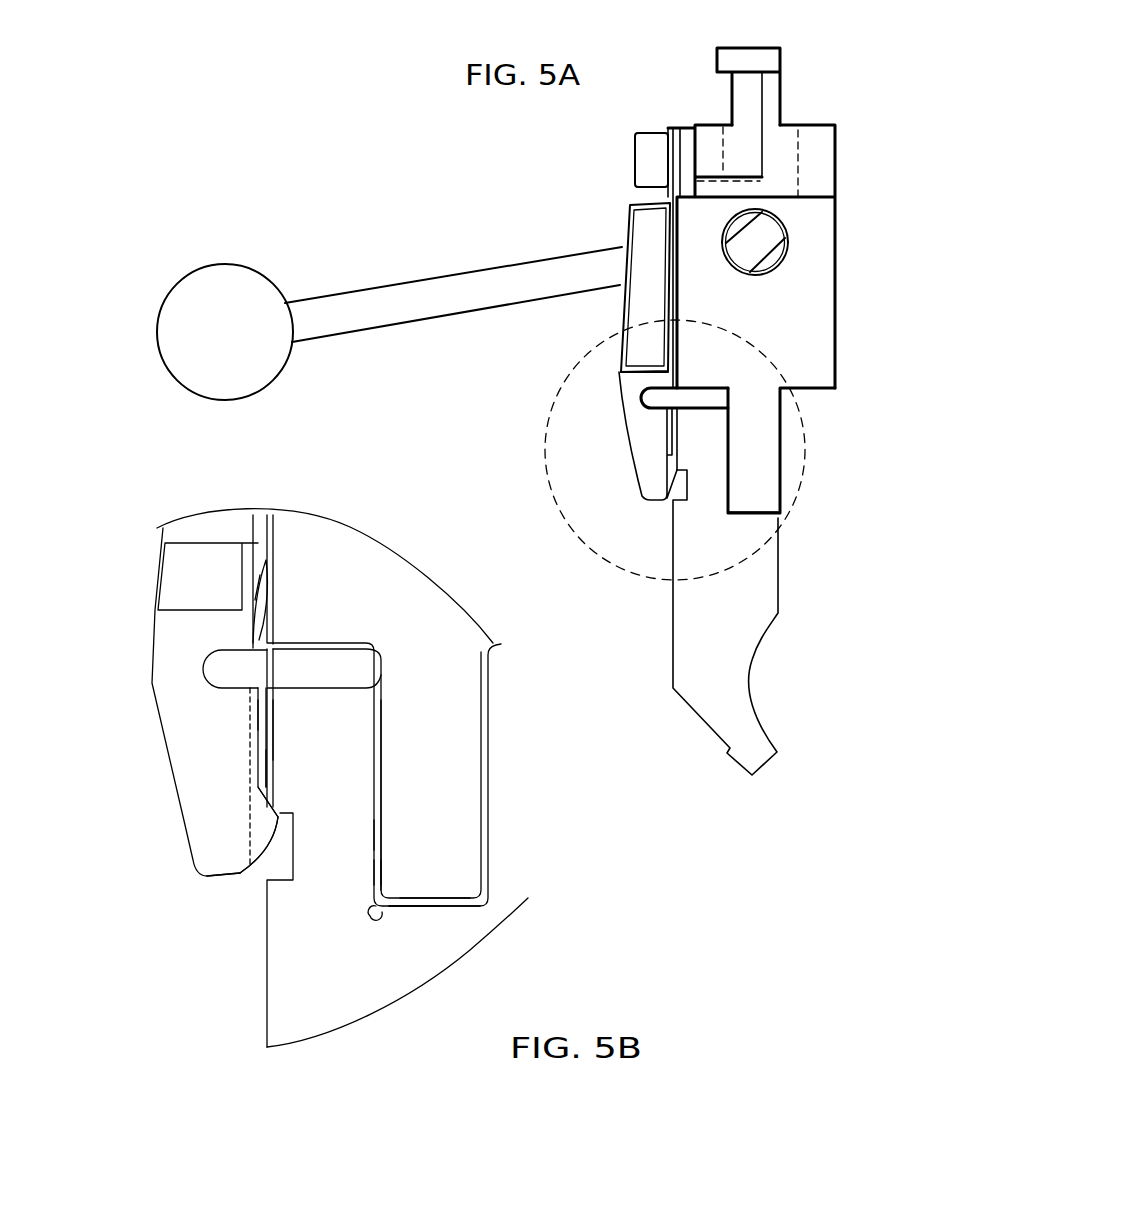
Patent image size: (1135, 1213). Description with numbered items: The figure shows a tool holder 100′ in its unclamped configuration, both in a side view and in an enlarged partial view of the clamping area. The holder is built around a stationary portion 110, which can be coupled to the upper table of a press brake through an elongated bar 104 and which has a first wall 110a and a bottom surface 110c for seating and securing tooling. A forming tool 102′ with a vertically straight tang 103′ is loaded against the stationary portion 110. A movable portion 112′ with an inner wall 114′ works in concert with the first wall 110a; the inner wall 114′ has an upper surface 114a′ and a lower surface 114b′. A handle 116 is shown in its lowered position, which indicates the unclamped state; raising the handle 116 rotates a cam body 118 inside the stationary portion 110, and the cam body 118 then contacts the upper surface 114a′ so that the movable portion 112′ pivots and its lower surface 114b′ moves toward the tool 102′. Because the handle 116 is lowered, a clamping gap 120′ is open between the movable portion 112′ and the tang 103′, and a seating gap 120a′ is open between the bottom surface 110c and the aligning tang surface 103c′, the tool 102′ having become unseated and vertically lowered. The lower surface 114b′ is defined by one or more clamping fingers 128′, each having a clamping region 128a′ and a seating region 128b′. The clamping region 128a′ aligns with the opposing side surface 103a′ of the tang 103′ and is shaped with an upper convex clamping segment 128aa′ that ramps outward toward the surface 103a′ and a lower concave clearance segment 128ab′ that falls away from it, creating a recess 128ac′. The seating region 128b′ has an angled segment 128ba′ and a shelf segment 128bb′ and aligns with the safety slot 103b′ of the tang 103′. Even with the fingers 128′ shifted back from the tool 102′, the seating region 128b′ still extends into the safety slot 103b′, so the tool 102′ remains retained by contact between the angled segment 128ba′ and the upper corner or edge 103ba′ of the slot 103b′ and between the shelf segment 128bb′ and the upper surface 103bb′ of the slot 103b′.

In FIG. 5A, the tool holder 100′ is at (548, 194).
In FIG. 5A, the forming tool 102′ is at (782, 590).
In FIG. 5B, the forming tool 102′ is at (481, 913).
In FIG. 5A, the tang 103′ is at (731, 460).
In FIG. 5B, the tang 103′ is at (381, 770).
In FIG. 5B, the side surface of the tool tang 103a′ is at (275, 763).
In FIG. 5B, the safety slot 103b′ is at (300, 870).
In FIG. 5B, the upper corner or edge of the safety slot 103ba′ is at (270, 810).
In FIG. 5B, the upper surface of the safety slot 103bb′ is at (285, 825).
In FIG. 5B, the tang surface 103c′ is at (442, 906).
In FIG. 5A, the elongated bar 104 is at (770, 48).
In FIG. 5A, the stationary portion 110 is at (835, 305).
In FIG. 5A, the first wall 110a is at (720, 493).
In FIG. 5B, the first wall 110a is at (372, 878).
In FIG. 5B, the bottom surface 110c is at (410, 906).
In FIG. 5A, the movable portion 112′ is at (608, 409).
In FIG. 5B, the movable portion 112′ is at (138, 620).
In FIG. 5A, the inner wall 114′ is at (674, 295).
In FIG. 5A, the upper surface of the inner wall 114a′ is at (668, 190).
In FIG. 5A, the lower surface of the inner wall 114b′ is at (676, 436).
In FIG. 5A, the handle 116 is at (372, 285).
In FIG. 5A, the cam body 118 is at (790, 232).
In FIG. 5A, the clamping gap 120′ is at (668, 447).
In FIG. 5B, the clamping gap 120′ is at (276, 670).
In FIG. 5A, the seating gap 120a′ is at (790, 520).
In FIG. 5B, the seating gap 120a′ is at (483, 907).
In FIG. 5A, the clamping fingers 128′ is at (657, 483).
In FIG. 5B, the clamping fingers 128′ is at (183, 785).
In FIG. 5B, the clamping region 128a′ is at (251, 741).
In FIG. 5B, the convex clamping segment 128aa′ is at (275, 728).
In FIG. 5B, the concave clearance segment 128ab′ is at (252, 777).
In FIG. 5B, the recess 128ac′ is at (275, 800).
In FIG. 5B, the seating region 128b′ is at (207, 877).
In FIG. 5B, the angled segment 128ba′ is at (250, 790).
In FIG. 5B, the shelf segment 128bb′ is at (270, 819).